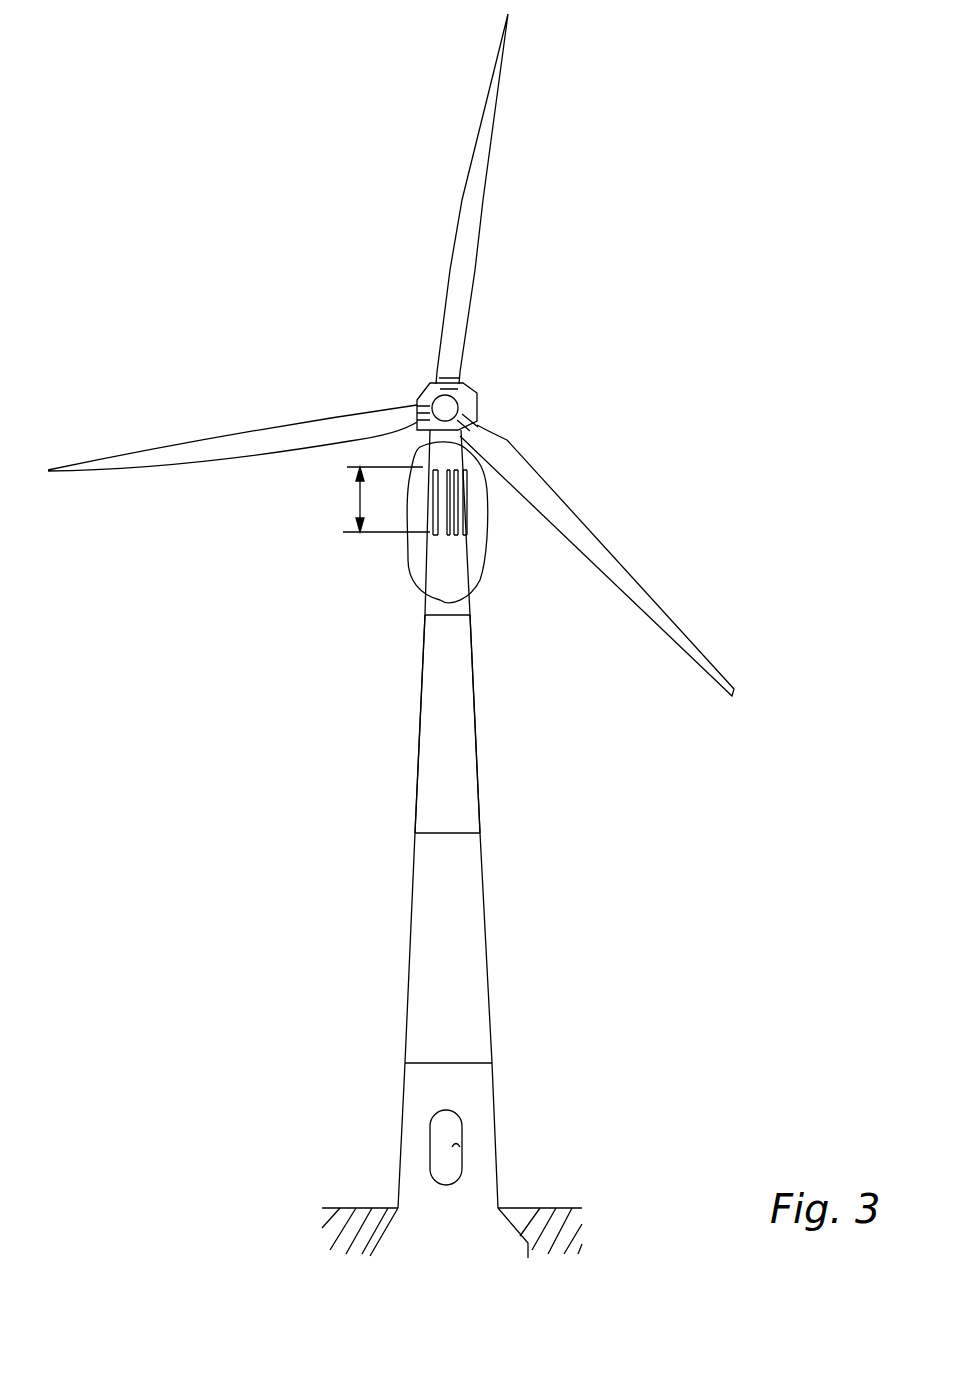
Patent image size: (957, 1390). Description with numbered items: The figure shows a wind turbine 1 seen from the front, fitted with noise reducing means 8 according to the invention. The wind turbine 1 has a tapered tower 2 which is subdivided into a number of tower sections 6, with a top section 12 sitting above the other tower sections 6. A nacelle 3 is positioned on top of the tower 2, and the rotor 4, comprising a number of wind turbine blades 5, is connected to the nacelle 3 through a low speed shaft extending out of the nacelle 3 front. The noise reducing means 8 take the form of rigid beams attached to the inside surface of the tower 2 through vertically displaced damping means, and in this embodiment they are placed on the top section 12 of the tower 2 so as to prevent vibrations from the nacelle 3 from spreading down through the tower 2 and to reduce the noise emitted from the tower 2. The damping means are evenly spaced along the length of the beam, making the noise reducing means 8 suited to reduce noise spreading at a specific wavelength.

The wind turbine 1 is at (388, 1026).
The tower 2 is at (477, 900).
The nacelle 3 is at (470, 399).
The rotor 4 is at (435, 398).
The wind turbine blade 5 is at (613, 563).
The tower section 6 is at (450, 659).
The noise reducing means 8 is at (428, 537).
The top section 12 is at (450, 578).